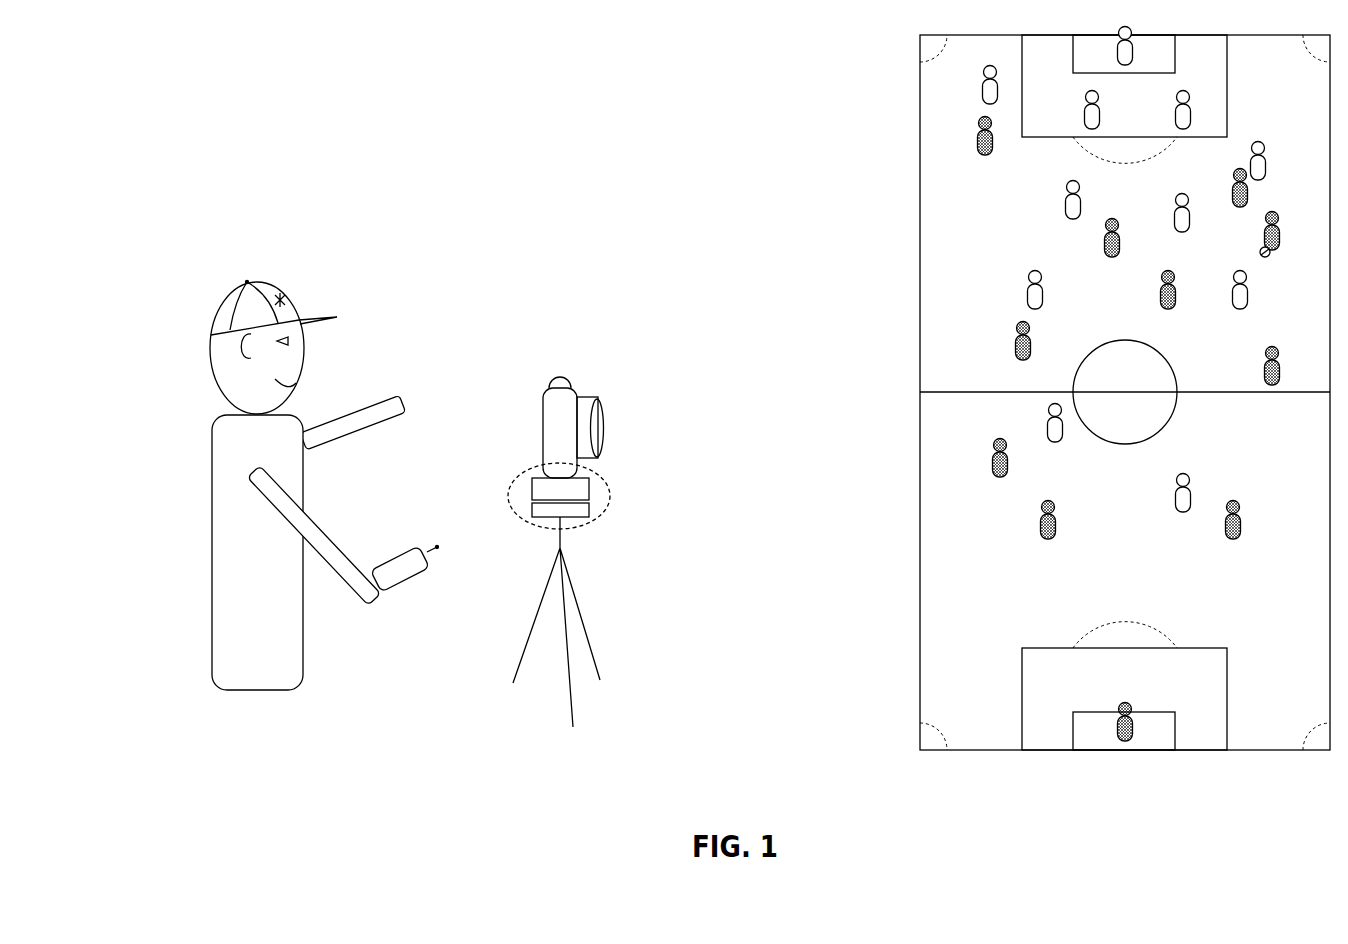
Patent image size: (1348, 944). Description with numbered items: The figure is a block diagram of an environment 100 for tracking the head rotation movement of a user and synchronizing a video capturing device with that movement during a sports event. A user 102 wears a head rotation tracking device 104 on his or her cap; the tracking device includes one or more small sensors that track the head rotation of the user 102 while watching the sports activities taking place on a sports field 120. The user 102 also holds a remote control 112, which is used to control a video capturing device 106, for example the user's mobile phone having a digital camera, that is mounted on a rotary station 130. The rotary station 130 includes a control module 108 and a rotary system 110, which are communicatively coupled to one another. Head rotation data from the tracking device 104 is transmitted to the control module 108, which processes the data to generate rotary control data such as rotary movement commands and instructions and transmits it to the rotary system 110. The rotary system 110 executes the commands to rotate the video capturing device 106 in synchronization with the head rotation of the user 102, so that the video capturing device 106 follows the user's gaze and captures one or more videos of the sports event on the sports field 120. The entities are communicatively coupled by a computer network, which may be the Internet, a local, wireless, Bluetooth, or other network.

The environment 100 is at (265, 145).
The user 102 is at (212, 473).
The head rotation tracking device 104 is at (282, 298).
The video capturing device 106 is at (577, 390).
The control module 108 is at (590, 510).
The rotary system 110 is at (590, 490).
The remote control 112 is at (402, 583).
The sports field 120 is at (920, 128).
The rotary station 130 is at (582, 527).